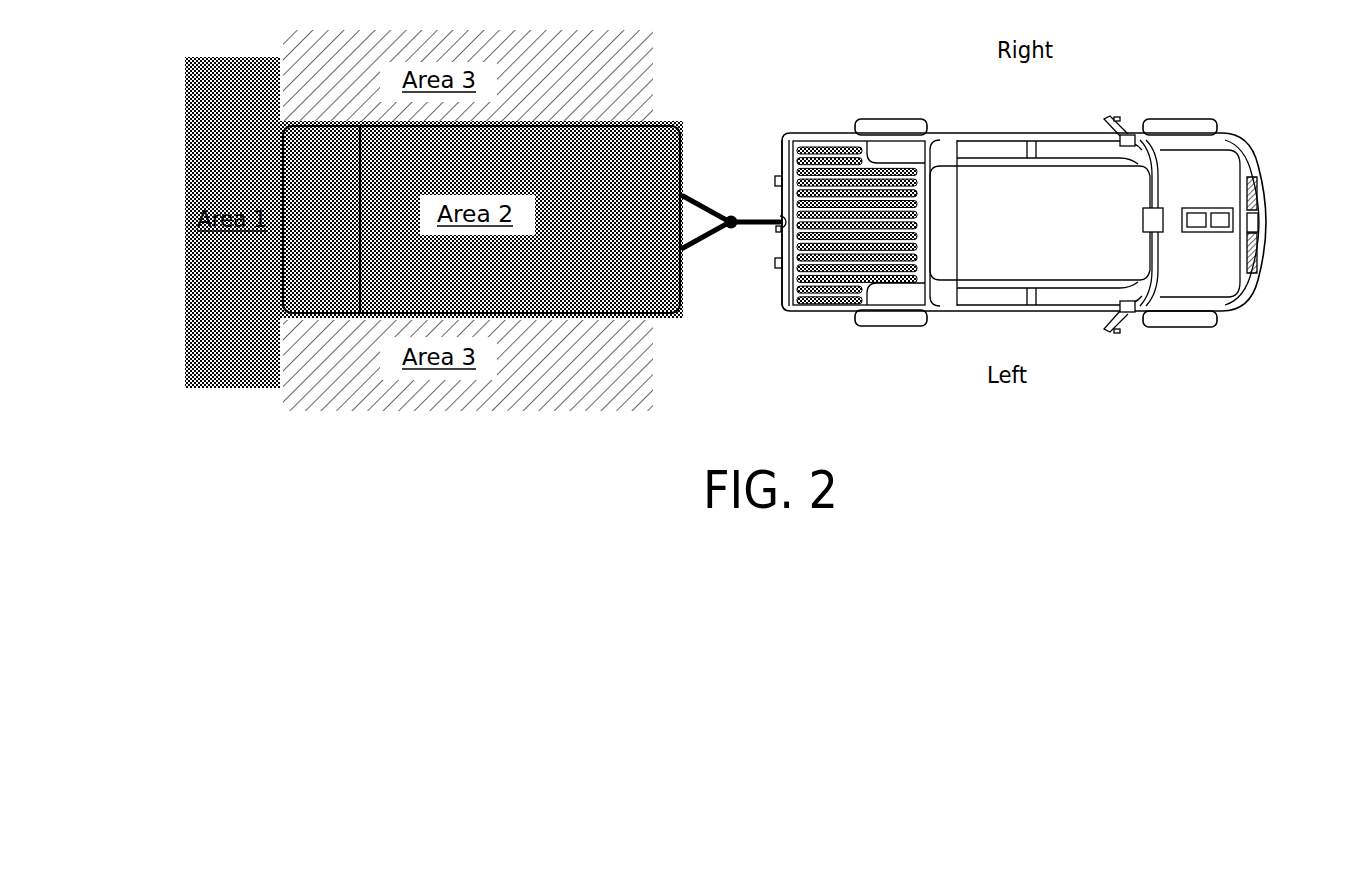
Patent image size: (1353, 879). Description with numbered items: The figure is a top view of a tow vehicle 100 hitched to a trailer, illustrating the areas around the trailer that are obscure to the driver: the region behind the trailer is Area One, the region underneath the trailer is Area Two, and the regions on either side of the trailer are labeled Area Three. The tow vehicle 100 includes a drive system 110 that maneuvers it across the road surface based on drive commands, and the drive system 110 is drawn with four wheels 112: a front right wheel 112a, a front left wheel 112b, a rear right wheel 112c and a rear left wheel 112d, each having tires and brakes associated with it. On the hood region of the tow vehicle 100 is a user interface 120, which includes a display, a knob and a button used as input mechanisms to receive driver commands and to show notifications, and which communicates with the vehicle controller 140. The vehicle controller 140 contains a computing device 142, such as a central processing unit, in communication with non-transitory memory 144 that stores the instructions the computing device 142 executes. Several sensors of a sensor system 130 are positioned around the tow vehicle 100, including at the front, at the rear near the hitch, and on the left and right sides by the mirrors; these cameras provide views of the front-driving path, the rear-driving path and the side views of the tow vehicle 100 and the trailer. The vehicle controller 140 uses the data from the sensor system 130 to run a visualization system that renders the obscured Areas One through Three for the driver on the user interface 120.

The tow vehicle 100 is at (1224, 108).
The drive system 110 is at (1040, 223).
The wheel 112 is at (1040, 223).
The front right wheel 112a is at (1186, 119).
The front left wheel 112b is at (1185, 328).
The rear right wheel 112c is at (891, 119).
The rear left wheel 112d is at (888, 326).
The user interface 120 is at (1144, 217).
The sensor system 130 is at (1114, 120).
The vehicle controller 140 is at (1210, 209).
The computing device 142 is at (1215, 228).
The non-transitory memory 144 is at (1196, 228).